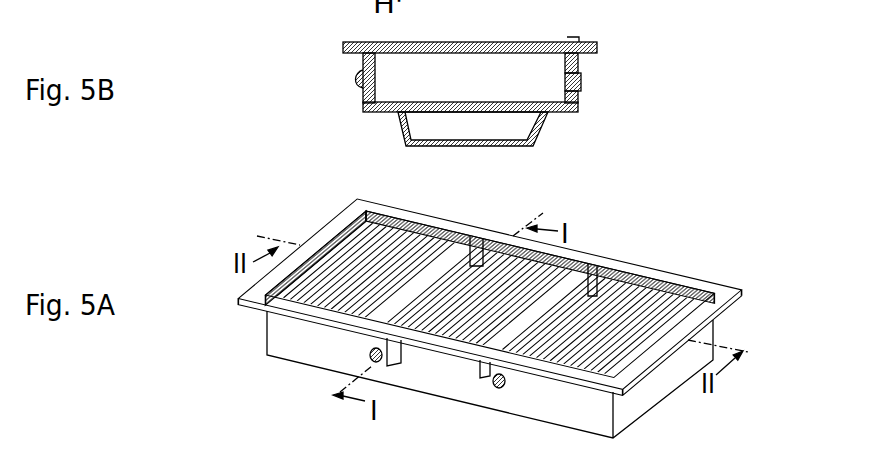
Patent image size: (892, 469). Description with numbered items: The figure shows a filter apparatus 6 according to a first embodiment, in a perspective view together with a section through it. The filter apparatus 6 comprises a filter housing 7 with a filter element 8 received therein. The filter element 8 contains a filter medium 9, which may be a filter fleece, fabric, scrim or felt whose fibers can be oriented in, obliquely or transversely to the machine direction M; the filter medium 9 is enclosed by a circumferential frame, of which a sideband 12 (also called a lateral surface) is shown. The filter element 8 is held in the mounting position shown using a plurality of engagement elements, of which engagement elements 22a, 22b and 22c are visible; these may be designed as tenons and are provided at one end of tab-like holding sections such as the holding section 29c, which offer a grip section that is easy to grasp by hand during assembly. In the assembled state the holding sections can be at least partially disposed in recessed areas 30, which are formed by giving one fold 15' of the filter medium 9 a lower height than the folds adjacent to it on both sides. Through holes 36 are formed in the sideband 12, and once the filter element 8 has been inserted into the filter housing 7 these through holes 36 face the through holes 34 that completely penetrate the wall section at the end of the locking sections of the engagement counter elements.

In FIG. 5A, the filter apparatus 6 is at (780, 238).
In FIG. 5A, the filter housing 7 is at (680, 382).
In FIG. 5A, the filter element 8 is at (488, 289).
In FIG. 5A, the filter medium 9 is at (682, 290).
In FIG. 5B, the sideband 12 is at (578, 104).
In FIG. 5B, the fold 15' is at (470, 26).
In FIG. 5A, the engagement element 22a is at (371, 352).
In FIG. 5A, the engagement element 22b is at (498, 389).
In FIG. 5B, the engagement element 22c is at (578, 84).
In FIG. 5B, the holding section 29c is at (566, 42).
In FIG. 5A, the recessed area 30 is at (456, 254).
In FIG. 5B, the through hole 34 is at (579, 80).
In FIG. 5B, the through hole 36 is at (570, 77).
In FIG. 5A, the machine direction M is at (376, 262).